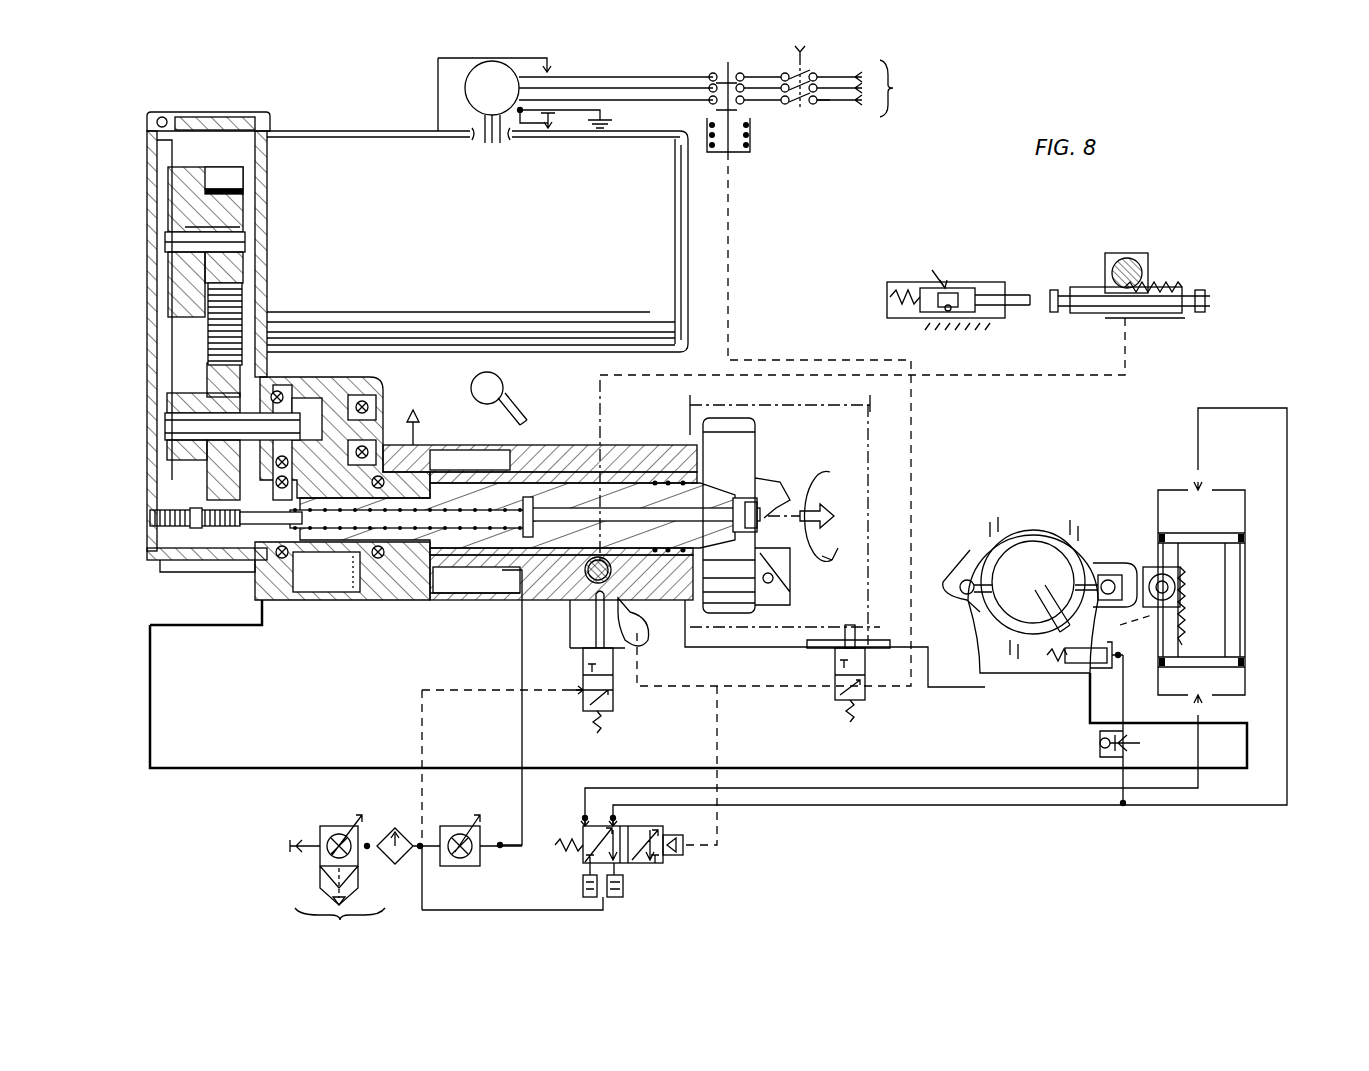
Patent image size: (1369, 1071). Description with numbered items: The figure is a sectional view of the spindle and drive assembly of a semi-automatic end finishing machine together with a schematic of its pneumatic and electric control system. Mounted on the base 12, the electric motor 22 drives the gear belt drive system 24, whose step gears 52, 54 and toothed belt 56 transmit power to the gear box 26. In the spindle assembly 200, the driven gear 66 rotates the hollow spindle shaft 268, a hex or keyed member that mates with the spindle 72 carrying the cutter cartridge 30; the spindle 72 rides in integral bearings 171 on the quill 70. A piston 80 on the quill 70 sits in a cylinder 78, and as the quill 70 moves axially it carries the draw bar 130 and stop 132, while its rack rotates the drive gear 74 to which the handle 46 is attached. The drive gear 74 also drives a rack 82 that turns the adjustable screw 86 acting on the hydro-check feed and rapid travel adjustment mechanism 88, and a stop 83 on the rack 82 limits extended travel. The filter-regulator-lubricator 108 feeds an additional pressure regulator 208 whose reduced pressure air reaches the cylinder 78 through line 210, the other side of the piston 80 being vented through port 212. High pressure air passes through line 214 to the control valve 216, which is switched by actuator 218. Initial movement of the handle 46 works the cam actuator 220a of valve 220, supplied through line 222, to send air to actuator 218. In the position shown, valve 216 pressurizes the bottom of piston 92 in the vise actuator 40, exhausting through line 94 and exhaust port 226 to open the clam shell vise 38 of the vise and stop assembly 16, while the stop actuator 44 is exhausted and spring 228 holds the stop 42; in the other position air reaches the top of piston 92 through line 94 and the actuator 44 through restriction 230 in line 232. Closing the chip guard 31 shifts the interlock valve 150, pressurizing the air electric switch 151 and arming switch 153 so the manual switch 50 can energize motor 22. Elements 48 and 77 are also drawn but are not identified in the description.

The base 12 is at (244, 720).
The vise and stop assembly 16 is at (1036, 505).
The electric motor 22 is at (477, 240).
The gear belt drive system 24 is at (232, 118).
The gear box 26 is at (360, 377).
The cutter cartridge 30 is at (755, 436).
The chip guard 31 is at (872, 470).
The clam shell type vise 38 is at (1060, 528).
The vise actuator 40 is at (1248, 556).
The stop 42 is at (1050, 590).
The stop actuator 44 is at (1148, 614).
The handle 46 is at (505, 400).
The power switch 48 is at (838, 81).
The manual switch 50 is at (815, 106).
The step gear 52 is at (202, 180).
The step gear 54 is at (215, 480).
The toothed belt 56 is at (245, 305).
The driven gear 66 is at (337, 580).
The quill 70 is at (522, 483).
The spindle 72 is at (600, 483).
The drive gear 74 is at (591, 584).
The feed screw block 77 is at (1148, 260).
The cylinder 78 is at (470, 460).
The piston 80 is at (442, 456).
The rack 82 is at (1175, 287).
The stop 83 is at (1205, 318).
The adjustable screw 86 is at (1050, 292).
The hydro-check feed and rapid travel adjustment mechanism 88 is at (898, 282).
The piston 92 is at (1163, 532).
The line 94 is at (1287, 650).
The filter-regulator-lubricator 108 is at (365, 883).
The draw bar 130 is at (253, 580).
The stop 132 is at (182, 530).
The interlock valve 150 is at (832, 690).
The air electric switch 151 is at (752, 150).
The switch 153 is at (719, 70).
The integral bearings 171 is at (683, 481).
The spindle assembly 200 is at (568, 442).
The pressure regulator 208 is at (462, 866).
The line 210 is at (524, 750).
The port 212 is at (415, 414).
The line 214 is at (530, 912).
The control valve 216 is at (668, 864).
The actuator 218 is at (688, 851).
The valve 220 is at (610, 712).
The cam actuator 220a is at (592, 630).
The line 222 is at (422, 750).
The exhaust port 226 is at (624, 890).
The spring 228 is at (1055, 664).
The restriction 230 is at (1127, 750).
The line 232 is at (1117, 765).
The hollow spindle shaft 268 is at (459, 588).